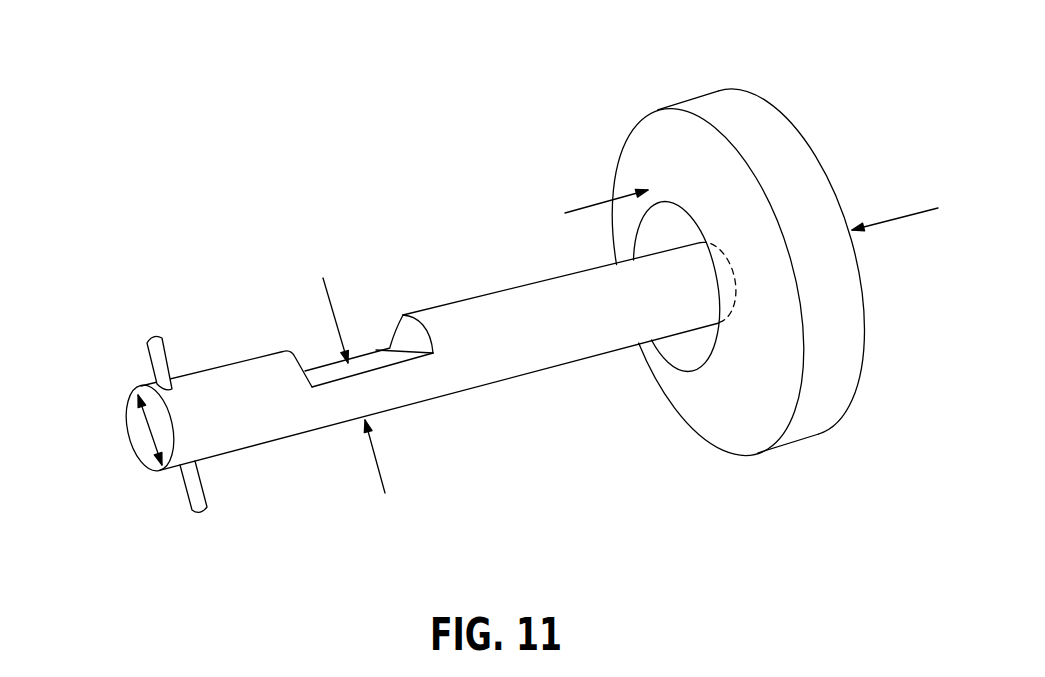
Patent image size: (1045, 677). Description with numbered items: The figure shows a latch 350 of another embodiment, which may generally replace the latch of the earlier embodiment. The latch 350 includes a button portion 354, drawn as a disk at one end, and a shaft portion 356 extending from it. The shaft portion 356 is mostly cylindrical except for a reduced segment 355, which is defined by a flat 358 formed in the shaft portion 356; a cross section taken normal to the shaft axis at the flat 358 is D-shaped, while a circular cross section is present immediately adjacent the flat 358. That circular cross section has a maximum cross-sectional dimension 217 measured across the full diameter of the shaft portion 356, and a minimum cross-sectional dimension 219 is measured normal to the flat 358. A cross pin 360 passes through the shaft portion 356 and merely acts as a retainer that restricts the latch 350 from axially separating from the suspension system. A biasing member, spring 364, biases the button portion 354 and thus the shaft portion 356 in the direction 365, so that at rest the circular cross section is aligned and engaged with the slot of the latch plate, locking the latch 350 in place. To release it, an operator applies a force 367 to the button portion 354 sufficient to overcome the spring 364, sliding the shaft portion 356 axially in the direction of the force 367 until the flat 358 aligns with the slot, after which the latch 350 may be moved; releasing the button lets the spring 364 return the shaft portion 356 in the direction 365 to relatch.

The latch 350 is at (707, 463).
The button portion 354 is at (743, 88).
The shaft portion 356 is at (213, 455).
The reduced segment 355 is at (324, 352).
The flat 358 is at (376, 350).
The cross pin 360 is at (150, 362).
The spring 364 is at (690, 202).
The direction 365 is at (583, 207).
The force 367 is at (898, 214).
The maximum cross-sectional dimension 217 is at (150, 437).
The minimum cross-sectional dimension 219 is at (328, 302).